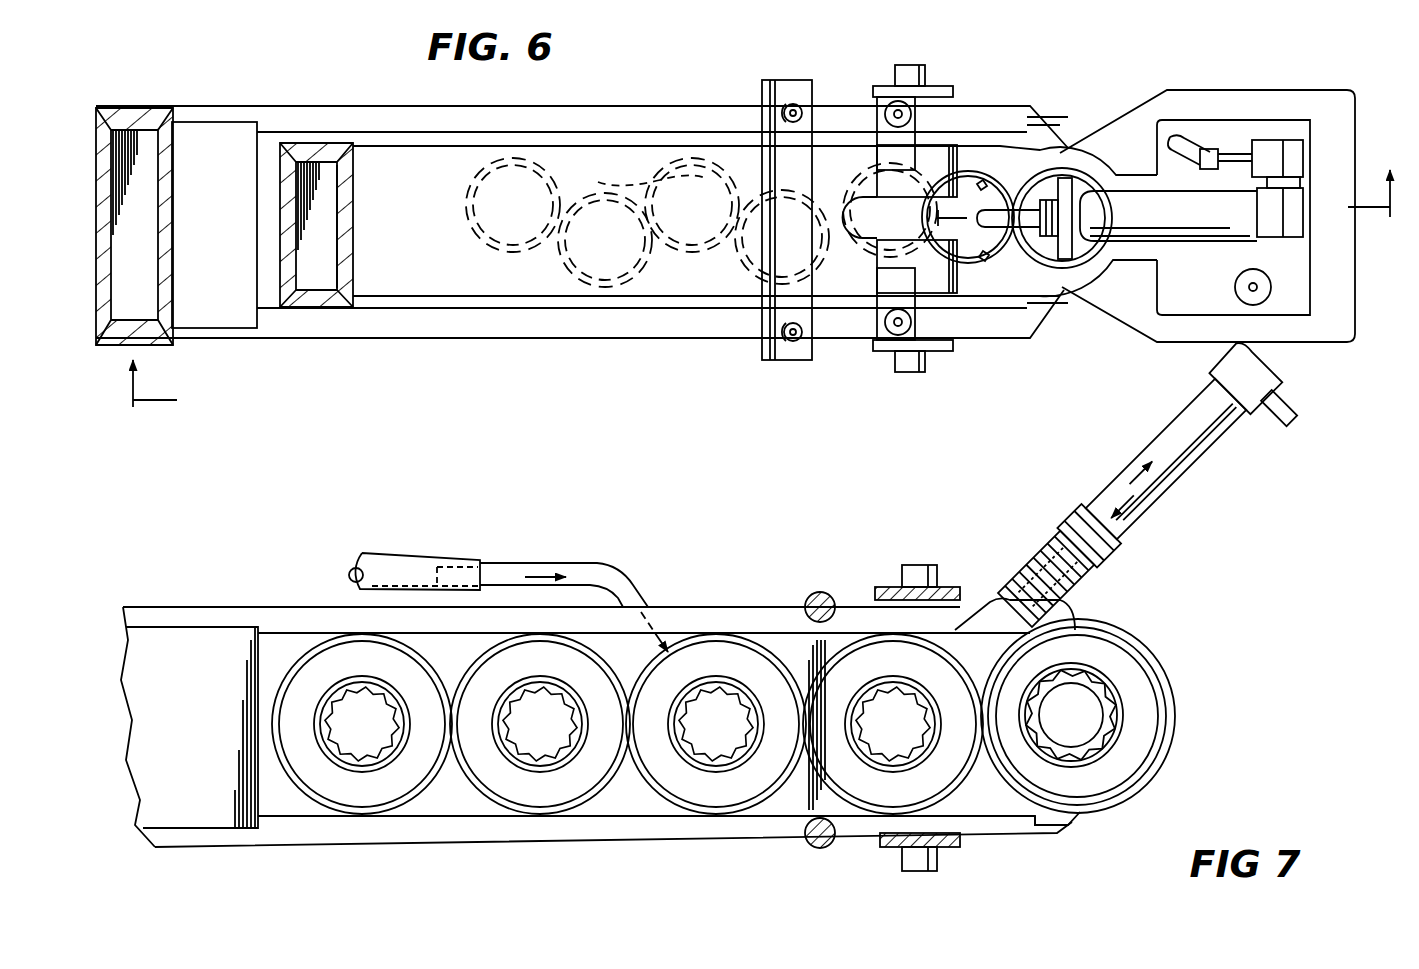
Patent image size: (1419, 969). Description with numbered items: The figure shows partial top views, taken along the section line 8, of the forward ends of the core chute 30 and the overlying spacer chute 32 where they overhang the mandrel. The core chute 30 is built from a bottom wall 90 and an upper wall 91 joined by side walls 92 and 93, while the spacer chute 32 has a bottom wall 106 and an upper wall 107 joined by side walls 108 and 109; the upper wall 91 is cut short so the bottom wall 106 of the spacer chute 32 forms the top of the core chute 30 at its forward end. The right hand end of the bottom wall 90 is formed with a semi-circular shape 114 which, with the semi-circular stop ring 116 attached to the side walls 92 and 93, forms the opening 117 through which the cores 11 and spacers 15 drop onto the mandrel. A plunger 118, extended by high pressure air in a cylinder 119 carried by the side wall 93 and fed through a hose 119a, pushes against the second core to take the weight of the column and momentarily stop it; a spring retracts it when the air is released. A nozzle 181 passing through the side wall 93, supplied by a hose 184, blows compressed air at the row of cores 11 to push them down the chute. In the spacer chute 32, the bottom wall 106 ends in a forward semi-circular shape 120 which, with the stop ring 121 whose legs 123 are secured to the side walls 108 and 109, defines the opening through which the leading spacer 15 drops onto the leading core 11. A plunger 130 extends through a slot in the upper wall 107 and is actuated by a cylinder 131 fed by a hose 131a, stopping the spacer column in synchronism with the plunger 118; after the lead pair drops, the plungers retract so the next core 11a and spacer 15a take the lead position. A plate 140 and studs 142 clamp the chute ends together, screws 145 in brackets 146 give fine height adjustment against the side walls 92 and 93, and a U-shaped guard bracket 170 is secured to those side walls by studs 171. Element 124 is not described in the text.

In FIG. 6, the section line 8— 8 is at (767, 271).
In FIG. 7, the core 11 is at (422, 668).
In FIG. 7, the next core 11a is at (880, 676).
In FIG. 6, the spacer 15 is at (572, 185).
In FIG. 6, the next spacer 15a is at (1000, 258).
In FIG. 6, the core chute 30 is at (132, 107).
In FIG. 7, the core chute 30 is at (552, 843).
In FIG. 6, the spacer chute 32 is at (300, 140).
In FIG. 6, the bottom wall 90 is at (114, 172).
In FIG. 7, the bottom wall 90 is at (466, 808).
In FIG. 6, the upper wall 91 is at (152, 208).
In FIG. 7, the upper wall 91 is at (258, 648).
In FIG. 6, the side wall 92 is at (130, 325).
In FIG. 7, the side wall 92 is at (362, 843).
In FIG. 6, the side wall 93 is at (146, 120).
In FIG. 7, the side wall 93 is at (327, 607).
In FIG. 6, the bottom wall 106 is at (287, 193).
In FIG. 6, the upper wall 107 is at (348, 234).
In FIG. 6, the side wall 108 is at (318, 306).
In FIG. 6, the side wall 109 is at (326, 150).
In FIG. 7, the semi-circular shape 114 is at (1038, 776).
In FIG. 6, the stop ring 116 is at (1088, 315).
In FIG. 7, the stop ring 116 is at (1156, 774).
In FIG. 7, the opening 117 is at (998, 673).
In FIG. 7, the plunger 118 is at (1000, 592).
In FIG. 7, the cylinder 119 is at (1197, 458).
In FIG. 7, the hose 119a is at (1296, 403).
In FIG. 6, the semi-circular shape 120 is at (1083, 270).
In FIG. 6, the stop ring 121 is at (1106, 167).
In FIG. 6, the legs 123 is at (1045, 152).
In FIG. 6, the lower clamp block 124 is at (890, 240).
In FIG. 6, the plunger 130 is at (1082, 210).
In FIG. 6, the cylinder 131 is at (1228, 235).
In FIG. 6, the hose 131a is at (1205, 145).
In FIG. 6, the plate 140 is at (762, 90).
In FIG. 6, the studs 142 is at (793, 104).
In FIG. 6, the screws 145 is at (912, 116).
In FIG. 6, the brackets 146 is at (900, 198).
In FIG. 6, the U-shaped bracket 170 is at (873, 92).
In FIG. 6, the studs 171 is at (928, 80).
In FIG. 7, the nozzle 181 is at (632, 582).
In FIG. 7, the hose 184 is at (413, 568).